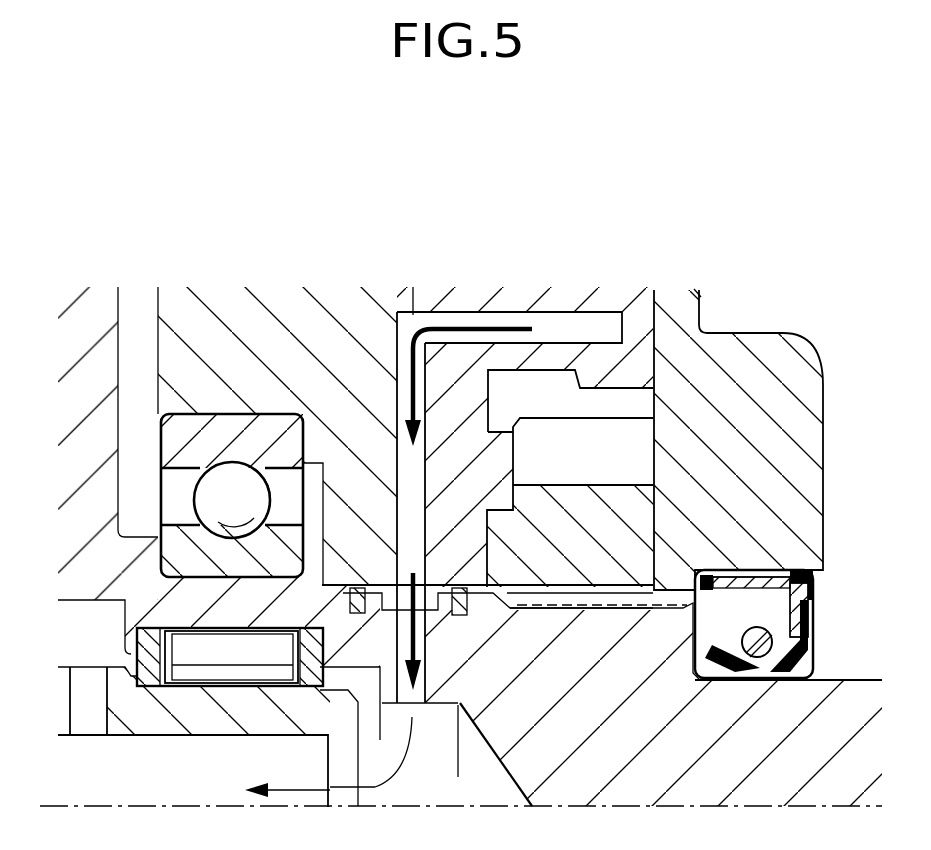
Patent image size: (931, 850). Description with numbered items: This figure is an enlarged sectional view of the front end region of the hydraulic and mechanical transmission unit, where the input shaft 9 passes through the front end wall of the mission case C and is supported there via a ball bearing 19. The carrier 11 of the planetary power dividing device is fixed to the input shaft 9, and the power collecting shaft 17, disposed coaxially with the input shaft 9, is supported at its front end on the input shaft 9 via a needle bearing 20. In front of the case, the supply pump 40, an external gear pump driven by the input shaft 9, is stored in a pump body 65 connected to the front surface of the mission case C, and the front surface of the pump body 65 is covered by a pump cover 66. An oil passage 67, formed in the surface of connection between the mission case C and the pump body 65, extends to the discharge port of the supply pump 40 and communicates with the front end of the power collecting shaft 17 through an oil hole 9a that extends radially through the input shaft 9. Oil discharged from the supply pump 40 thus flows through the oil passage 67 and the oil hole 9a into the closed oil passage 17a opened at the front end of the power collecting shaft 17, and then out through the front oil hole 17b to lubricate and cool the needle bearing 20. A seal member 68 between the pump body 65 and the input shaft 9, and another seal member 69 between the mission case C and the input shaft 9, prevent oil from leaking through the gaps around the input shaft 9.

The carrier 11 is at (130, 292).
The mission case C is at (290, 292).
The pump body 65 is at (536, 290).
The oil passage 67 is at (397, 356).
The supply pump 40 is at (620, 413).
The pump cover 66 is at (797, 484).
The ball bearing 19 is at (200, 497).
The seal member 69 is at (357, 590).
The seal member 68 is at (462, 617).
The input shaft 9 is at (848, 668).
The oil hole 9a is at (417, 697).
The power collecting shaft 17 is at (60, 642).
The closed oil passage 17a is at (143, 737).
The oil hole 17b is at (90, 722).
The needle bearing 20 is at (235, 672).